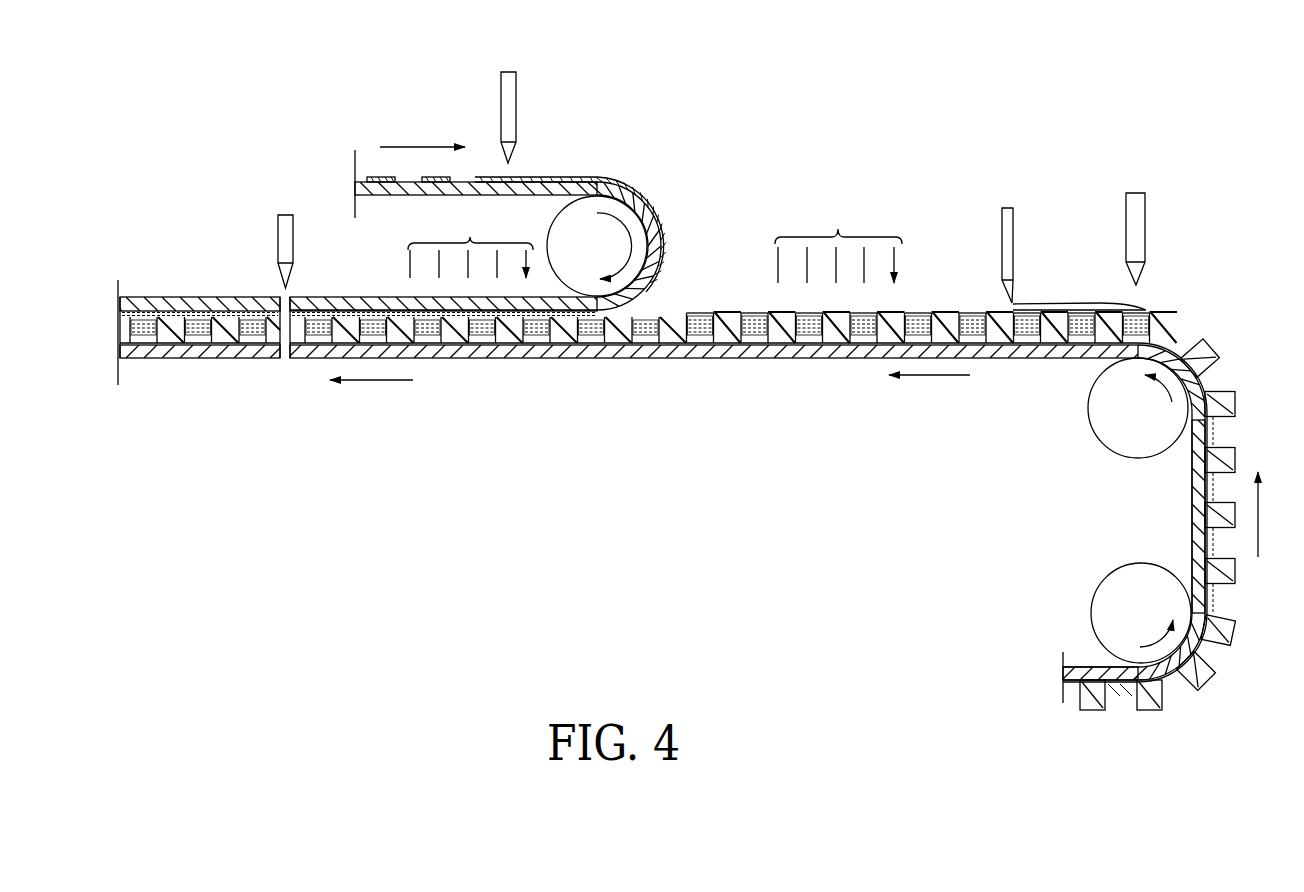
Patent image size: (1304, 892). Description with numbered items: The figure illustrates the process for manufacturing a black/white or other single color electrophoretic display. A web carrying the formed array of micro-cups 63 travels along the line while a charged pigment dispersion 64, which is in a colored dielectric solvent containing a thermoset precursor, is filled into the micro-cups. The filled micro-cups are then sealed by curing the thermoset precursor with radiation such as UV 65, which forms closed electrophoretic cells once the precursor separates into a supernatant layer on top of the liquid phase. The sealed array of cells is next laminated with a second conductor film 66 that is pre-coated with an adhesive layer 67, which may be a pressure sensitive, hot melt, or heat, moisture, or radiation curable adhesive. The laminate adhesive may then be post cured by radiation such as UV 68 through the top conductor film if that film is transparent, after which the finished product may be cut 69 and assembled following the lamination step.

The array of micro-cups 63 is at (1117, 705).
The charged pigment dispersion 64 is at (1136, 314).
The UV radiation for sealing 65 is at (897, 267).
The second conductor film 66 is at (652, 227).
The adhesive layer 67 is at (630, 181).
The UV radiation for post curing 68 is at (410, 271).
The cutting 69 is at (278, 252).